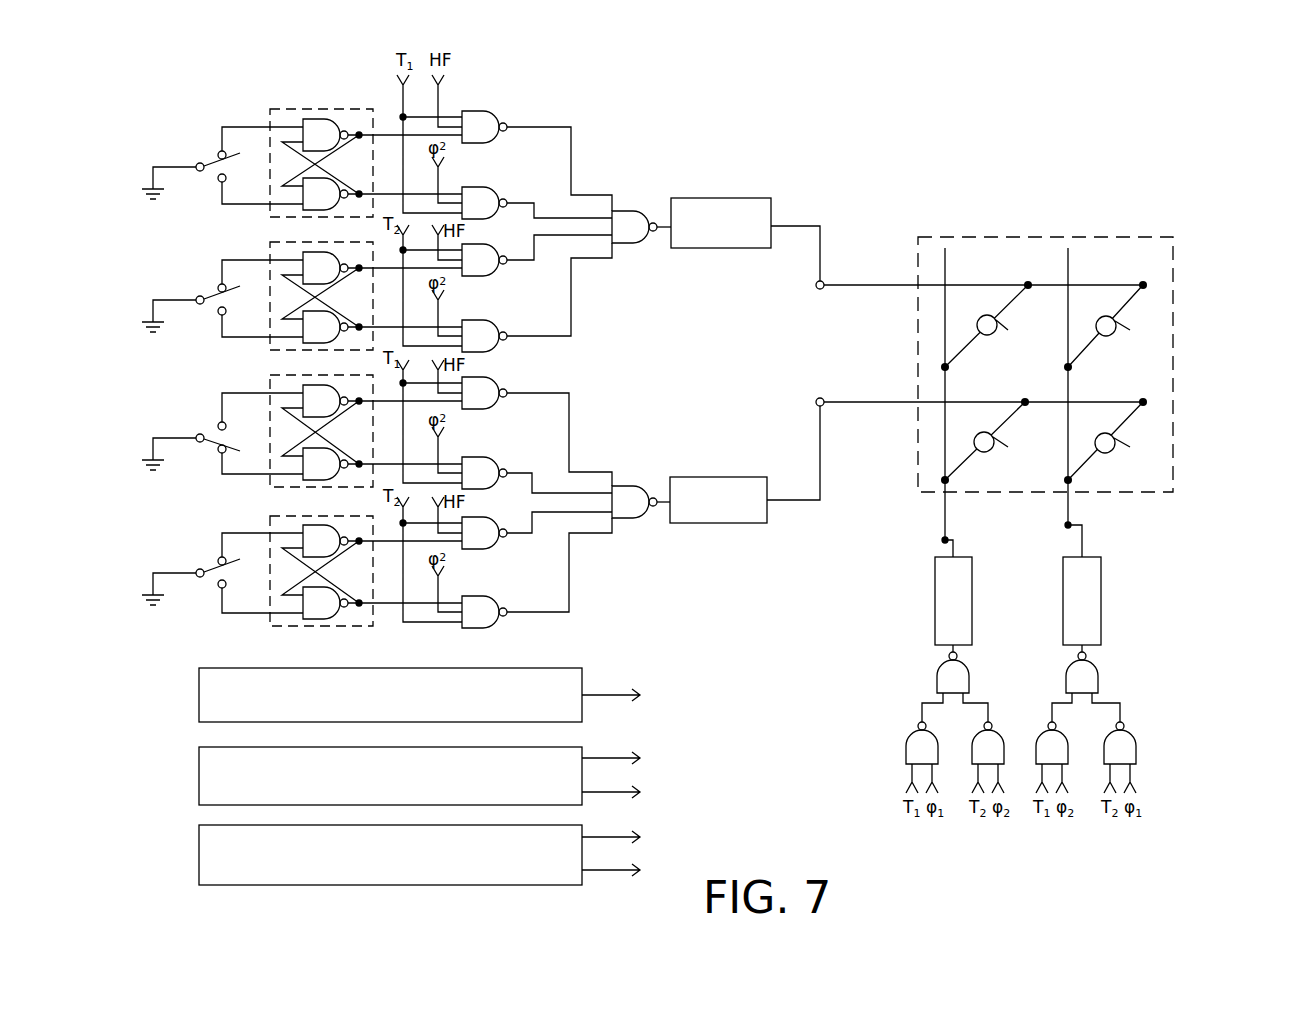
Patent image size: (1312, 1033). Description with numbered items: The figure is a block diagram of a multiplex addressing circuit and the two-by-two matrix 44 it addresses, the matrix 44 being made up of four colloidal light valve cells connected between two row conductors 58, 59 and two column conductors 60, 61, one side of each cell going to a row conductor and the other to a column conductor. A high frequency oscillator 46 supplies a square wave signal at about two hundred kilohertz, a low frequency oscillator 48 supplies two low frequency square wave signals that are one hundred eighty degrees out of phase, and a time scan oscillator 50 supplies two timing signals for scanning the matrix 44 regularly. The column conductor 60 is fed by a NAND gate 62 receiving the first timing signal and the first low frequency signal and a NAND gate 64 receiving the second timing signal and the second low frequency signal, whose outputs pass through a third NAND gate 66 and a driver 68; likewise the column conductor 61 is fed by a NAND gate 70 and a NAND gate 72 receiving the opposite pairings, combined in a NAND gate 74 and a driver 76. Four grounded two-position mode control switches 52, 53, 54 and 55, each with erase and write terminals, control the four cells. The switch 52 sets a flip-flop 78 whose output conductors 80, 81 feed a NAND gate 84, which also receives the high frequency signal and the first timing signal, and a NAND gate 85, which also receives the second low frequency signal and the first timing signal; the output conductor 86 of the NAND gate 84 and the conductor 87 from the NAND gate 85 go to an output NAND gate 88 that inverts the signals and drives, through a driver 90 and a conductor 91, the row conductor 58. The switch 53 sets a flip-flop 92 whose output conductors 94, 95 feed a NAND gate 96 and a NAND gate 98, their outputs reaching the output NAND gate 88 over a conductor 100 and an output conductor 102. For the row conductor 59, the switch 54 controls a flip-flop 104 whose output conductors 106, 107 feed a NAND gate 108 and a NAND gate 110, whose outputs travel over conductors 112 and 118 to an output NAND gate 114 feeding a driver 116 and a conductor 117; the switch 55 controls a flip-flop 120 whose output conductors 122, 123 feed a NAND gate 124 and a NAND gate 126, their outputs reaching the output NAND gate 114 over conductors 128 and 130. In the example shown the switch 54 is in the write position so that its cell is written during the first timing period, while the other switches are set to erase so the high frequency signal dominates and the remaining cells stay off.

The matrix 44 is at (1057, 360).
The high frequency oscillator 46 is at (199, 700).
The low frequency oscillator 48 is at (199, 785).
The time scan oscillator 50 is at (199, 860).
The mode control switch 52 is at (173, 165).
The mode control switch 53 is at (173, 298).
The mode control switch 54 is at (173, 436).
The mode control switch 55 is at (173, 571).
The row conductor 58 is at (862, 284).
The row conductor 59 is at (876, 404).
The column conductor 60 is at (945, 527).
The column conductor 61 is at (1068, 518).
The NAND gate 62 is at (907, 737).
The NAND gate 64 is at (975, 752).
The NAND gate 66 is at (972, 668).
The driver 68 is at (972, 605).
The NAND gate 70 is at (1040, 735).
The NAND gate 72 is at (1132, 737).
The NAND gate 74 is at (1100, 668).
The driver 76 is at (1101, 602).
The flip-flop 78 is at (366, 124).
The output conductor 80 is at (387, 132).
The output conductor 81 is at (387, 188).
The NAND gate 84 is at (477, 110).
The NAND gate 85 is at (482, 187).
The output conductor 86 is at (575, 170).
The line 87 is at (552, 218).
The output NAND gate 88 is at (632, 210).
The driver 90 is at (725, 198).
The conductor 91 is at (803, 226).
The flip-flop 92 is at (337, 285).
The output conductor 94 is at (387, 267).
The output conductor 95 is at (387, 325).
The NAND gate 96 is at (488, 252).
The NAND gate 98 is at (485, 322).
The conductor 100 is at (551, 236).
The output conductor 102 is at (572, 310).
The flip-flop 104 is at (332, 420).
The output conductor 106 is at (388, 400).
The output conductor 107 is at (387, 462).
The NAND gate 108 is at (490, 380).
The NAND gate 110 is at (480, 457).
The conductor 112 is at (572, 422).
The output NAND gate 114 is at (634, 486).
The driver 116 is at (712, 477).
The conductor 117 is at (795, 500).
The conductor 118 is at (520, 477).
The flip-flop 120 is at (316, 578).
The output conductor 122 is at (390, 540).
The conductor 123 is at (382, 607).
The NAND gate 124 is at (483, 548).
The NAND gate 126 is at (492, 598).
The conductor 128 is at (556, 513).
The conductor 130 is at (572, 588).